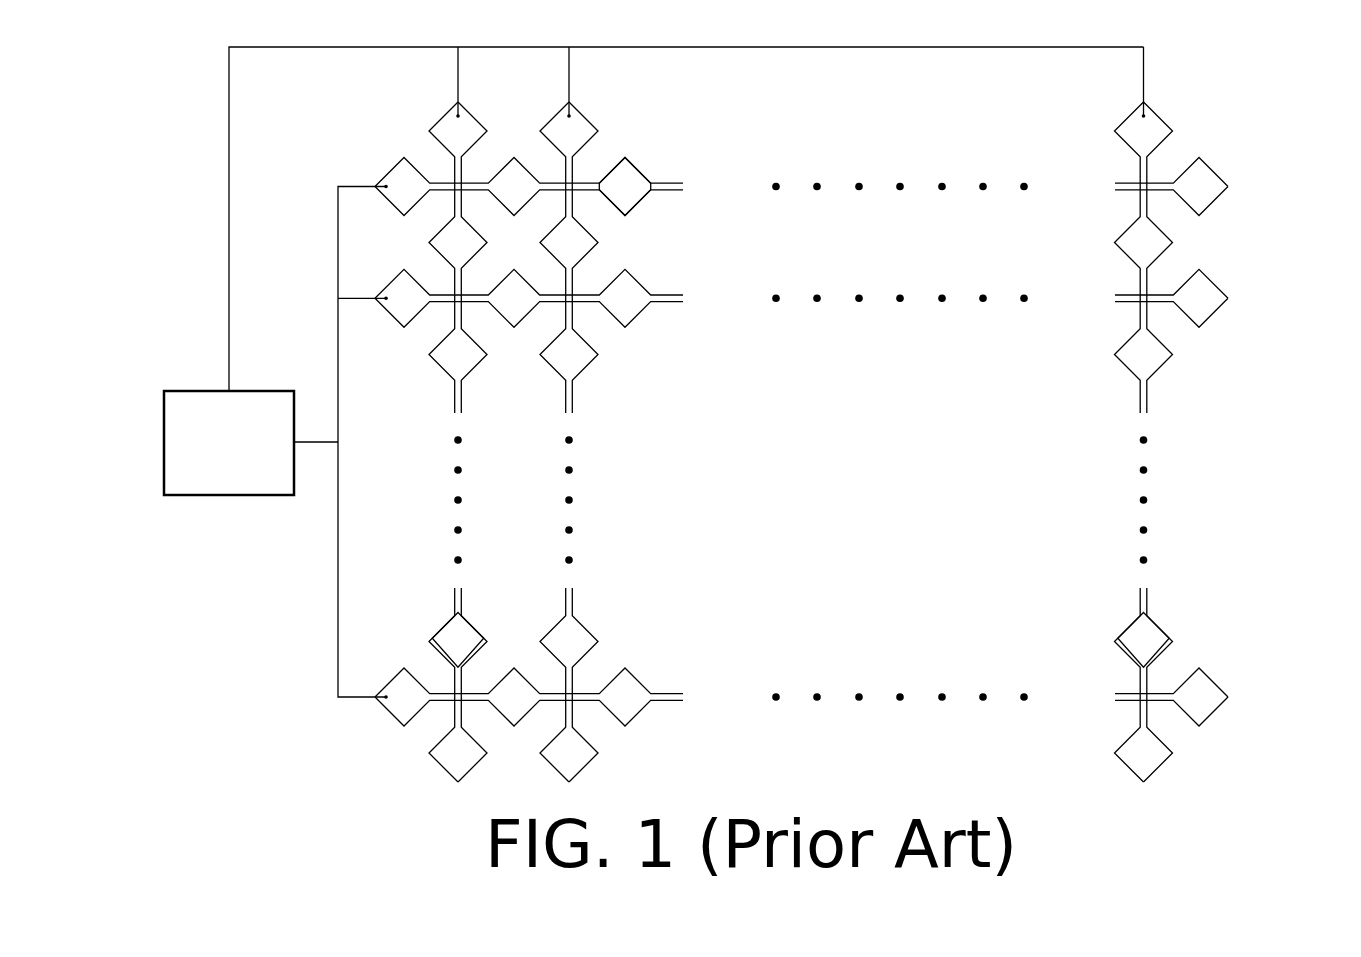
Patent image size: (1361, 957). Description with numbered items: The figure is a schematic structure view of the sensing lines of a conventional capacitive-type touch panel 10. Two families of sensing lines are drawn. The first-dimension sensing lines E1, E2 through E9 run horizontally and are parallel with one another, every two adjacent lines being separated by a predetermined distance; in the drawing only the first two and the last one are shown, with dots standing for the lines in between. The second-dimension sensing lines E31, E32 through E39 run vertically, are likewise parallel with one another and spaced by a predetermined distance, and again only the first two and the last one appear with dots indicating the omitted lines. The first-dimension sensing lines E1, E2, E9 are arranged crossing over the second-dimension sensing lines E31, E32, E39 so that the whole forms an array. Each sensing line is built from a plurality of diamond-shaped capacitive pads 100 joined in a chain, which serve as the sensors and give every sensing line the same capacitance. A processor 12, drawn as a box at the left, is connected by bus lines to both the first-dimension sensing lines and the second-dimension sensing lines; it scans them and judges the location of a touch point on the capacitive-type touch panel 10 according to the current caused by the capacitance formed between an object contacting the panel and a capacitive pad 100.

The capacitive-type touch panel 10 is at (780, 414).
The processor 12 is at (252, 478).
The capacitive pad 100 is at (633, 171).
The first-dimension sensing line E1 is at (386, 170).
The first-dimension sensing line E2 is at (386, 280).
The first-dimension sensing line E9 is at (385, 679).
The second-dimension sensing line E31 is at (445, 109).
The second-dimension sensing line E32 is at (556, 109).
The second-dimension sensing line E39 is at (1129, 109).